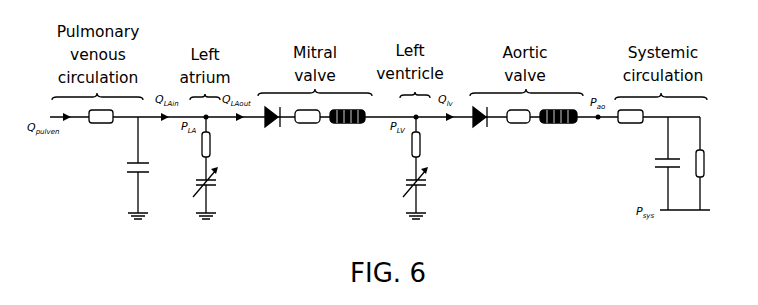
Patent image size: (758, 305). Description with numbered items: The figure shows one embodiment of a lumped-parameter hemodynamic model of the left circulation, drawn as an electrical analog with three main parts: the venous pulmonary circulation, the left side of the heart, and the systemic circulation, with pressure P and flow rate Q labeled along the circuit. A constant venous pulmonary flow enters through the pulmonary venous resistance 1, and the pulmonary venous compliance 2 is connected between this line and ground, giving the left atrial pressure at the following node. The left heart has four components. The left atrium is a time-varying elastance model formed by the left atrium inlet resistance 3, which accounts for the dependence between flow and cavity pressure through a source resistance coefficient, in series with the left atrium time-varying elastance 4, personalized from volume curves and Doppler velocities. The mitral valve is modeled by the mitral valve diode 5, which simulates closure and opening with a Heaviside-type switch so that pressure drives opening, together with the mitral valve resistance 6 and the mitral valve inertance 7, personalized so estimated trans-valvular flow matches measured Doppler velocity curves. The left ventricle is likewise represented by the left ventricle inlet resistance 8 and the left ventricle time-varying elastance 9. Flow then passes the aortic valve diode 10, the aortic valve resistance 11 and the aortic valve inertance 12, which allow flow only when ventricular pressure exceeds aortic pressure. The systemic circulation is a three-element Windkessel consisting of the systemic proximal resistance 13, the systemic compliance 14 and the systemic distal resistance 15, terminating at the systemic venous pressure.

The pulmonary venous resistance 1 is at (97, 126).
The pulmonary venous compliance 2 is at (117, 168).
The left atrium inlet resistance 3 is at (221, 148).
The left atrium time-varying elastance 4 is at (217, 193).
The mitral valve diode 5 is at (301, 85).
The mitral valve resistance 6 is at (307, 126).
The mitral valve inertance 7 is at (347, 126).
The left ventricle inlet resistance 8 is at (431, 148).
The left ventricle time-varying elastance 9 is at (427, 193).
The aortic valve diode 10 is at (510, 85).
The aortic valve resistance 11 is at (518, 126).
The aortic valve inertance 12 is at (558, 126).
The systemic proximal resistance 13 is at (630, 126).
The systemic compliance 14 is at (655, 163).
The systemic distal resistance 15 is at (714, 163).